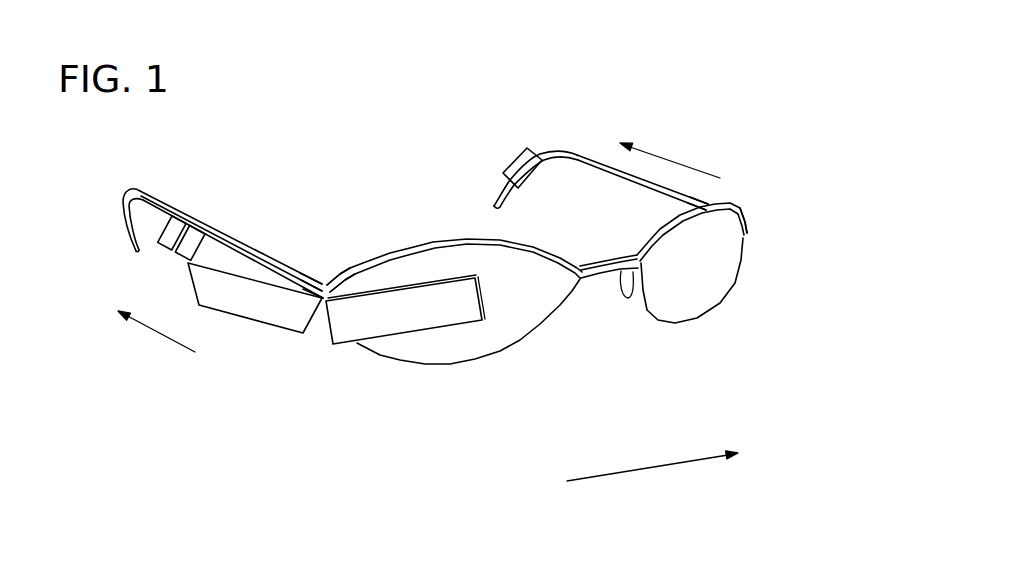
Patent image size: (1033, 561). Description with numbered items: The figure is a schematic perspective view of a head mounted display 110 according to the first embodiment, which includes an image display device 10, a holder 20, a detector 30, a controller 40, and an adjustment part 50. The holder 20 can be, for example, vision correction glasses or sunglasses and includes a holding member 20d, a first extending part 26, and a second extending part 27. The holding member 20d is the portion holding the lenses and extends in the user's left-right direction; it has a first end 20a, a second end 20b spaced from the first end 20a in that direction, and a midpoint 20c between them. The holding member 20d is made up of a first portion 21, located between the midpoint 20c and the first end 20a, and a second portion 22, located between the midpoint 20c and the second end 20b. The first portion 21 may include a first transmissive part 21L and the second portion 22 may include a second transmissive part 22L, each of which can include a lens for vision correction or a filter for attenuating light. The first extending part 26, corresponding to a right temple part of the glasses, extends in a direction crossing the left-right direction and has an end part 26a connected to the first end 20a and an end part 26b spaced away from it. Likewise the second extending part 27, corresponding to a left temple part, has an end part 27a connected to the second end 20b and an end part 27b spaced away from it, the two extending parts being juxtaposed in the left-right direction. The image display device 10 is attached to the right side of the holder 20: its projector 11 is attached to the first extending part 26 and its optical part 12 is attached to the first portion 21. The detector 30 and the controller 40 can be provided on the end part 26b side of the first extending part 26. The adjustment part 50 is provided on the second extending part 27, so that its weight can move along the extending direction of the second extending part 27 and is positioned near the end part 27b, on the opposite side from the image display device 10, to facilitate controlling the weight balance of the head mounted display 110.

The head mounted display 110 is at (766, 110).
The image display device 10 is at (320, 397).
The projector 11 is at (257, 291).
The optical part 12 is at (343, 318).
The holder 20 is at (190, 186).
The first end 20a is at (333, 287).
The second end 20b is at (748, 233).
The midpoint 20c is at (608, 278).
The holding member 20d is at (660, 397).
The first portion 21 is at (485, 243).
The first transmissive part 21L is at (495, 333).
The second portion 22 is at (662, 237).
The second transmissive part 22L is at (690, 287).
The first extending part 26 is at (200, 230).
The end part 26a is at (323, 283).
The end part 26b is at (138, 252).
The second extending part 27 is at (580, 162).
The end part 27a is at (749, 230).
The end part 27b is at (497, 203).
The detector 30 is at (170, 244).
The controller 40 is at (181, 254).
The adjustment part 50 is at (532, 149).